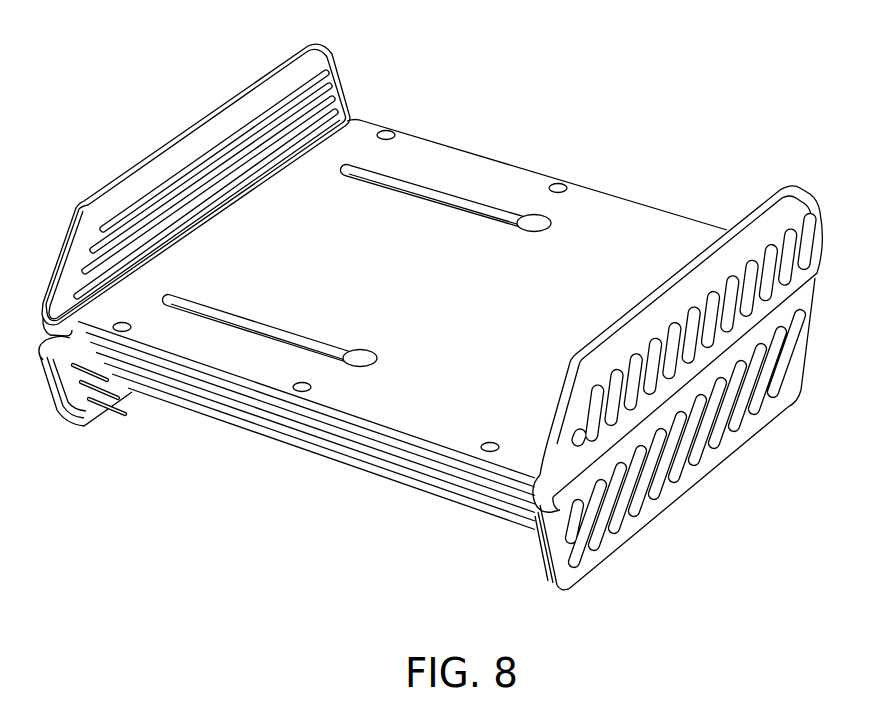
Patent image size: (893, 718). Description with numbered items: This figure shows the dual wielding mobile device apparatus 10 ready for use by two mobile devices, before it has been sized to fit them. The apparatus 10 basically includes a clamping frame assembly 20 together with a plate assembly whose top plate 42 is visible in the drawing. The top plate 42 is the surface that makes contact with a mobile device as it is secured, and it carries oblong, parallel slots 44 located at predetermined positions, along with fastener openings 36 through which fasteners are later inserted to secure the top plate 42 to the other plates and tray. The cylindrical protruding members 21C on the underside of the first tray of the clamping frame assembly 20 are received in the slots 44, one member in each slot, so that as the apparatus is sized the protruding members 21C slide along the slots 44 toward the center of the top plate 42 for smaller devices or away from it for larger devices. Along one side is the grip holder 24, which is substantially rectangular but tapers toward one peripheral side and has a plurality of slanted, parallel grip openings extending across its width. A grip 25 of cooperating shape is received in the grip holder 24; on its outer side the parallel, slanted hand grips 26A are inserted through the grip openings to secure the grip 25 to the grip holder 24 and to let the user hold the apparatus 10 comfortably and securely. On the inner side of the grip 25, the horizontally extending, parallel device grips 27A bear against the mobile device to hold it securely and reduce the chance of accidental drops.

The dual wielding mobile device apparatus 10 is at (219, 54).
The clamping frame assembly 20 is at (96, 181).
The device grips 27A is at (182, 168).
The fastener openings 36 is at (388, 130).
The slots 44 is at (428, 182).
The protruding members 21C is at (536, 221).
The top plate 42 is at (645, 247).
The grip 25 is at (781, 187).
The grip holder 24 is at (806, 207).
The hand grips 26A is at (814, 274).